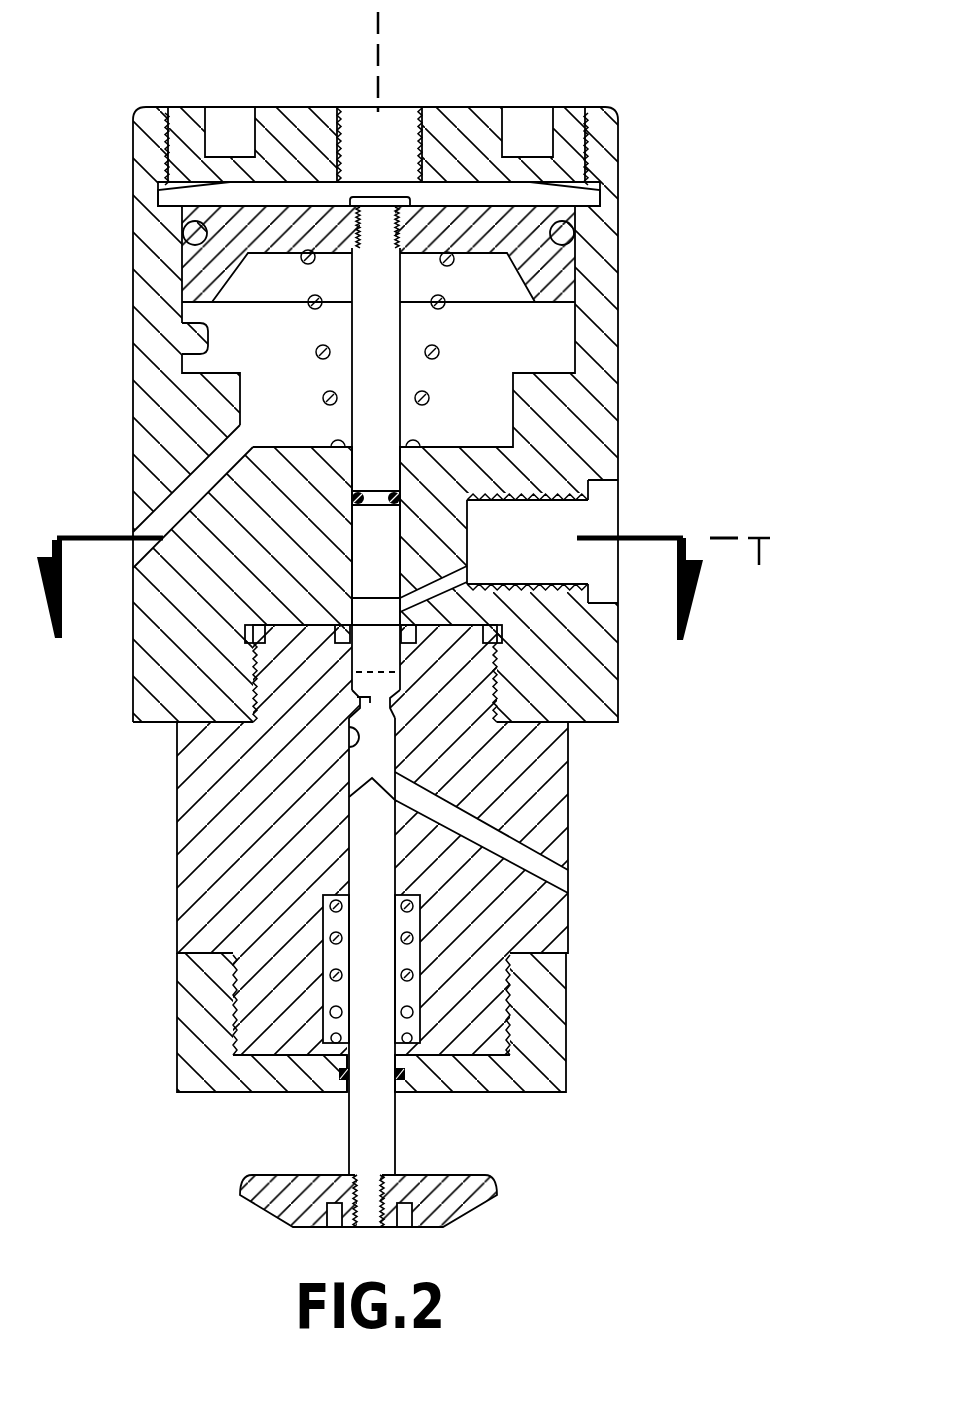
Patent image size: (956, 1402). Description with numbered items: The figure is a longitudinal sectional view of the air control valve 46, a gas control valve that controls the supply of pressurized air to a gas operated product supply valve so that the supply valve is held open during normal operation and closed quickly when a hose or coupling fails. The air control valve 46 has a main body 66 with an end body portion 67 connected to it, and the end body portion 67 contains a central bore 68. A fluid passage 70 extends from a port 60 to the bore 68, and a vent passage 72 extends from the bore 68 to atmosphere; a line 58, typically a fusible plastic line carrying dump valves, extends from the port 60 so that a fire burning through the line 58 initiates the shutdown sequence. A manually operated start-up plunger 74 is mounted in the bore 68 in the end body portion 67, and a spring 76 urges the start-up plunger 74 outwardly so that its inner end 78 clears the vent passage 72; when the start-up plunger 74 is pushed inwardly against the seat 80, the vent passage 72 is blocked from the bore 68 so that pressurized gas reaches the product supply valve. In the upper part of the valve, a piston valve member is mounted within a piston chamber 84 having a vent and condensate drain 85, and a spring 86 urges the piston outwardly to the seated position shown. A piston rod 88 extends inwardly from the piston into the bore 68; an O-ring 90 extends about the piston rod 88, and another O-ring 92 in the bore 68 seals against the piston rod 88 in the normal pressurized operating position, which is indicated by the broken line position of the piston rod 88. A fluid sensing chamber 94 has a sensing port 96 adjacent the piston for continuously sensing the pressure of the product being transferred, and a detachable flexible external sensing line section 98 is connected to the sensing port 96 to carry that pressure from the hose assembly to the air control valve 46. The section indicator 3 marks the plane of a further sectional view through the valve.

The section line 3- 3 is at (387, 568).
The air control valve 46 is at (407, 618).
The line 58 is at (762, 570).
The port 60 is at (570, 515).
The main body 66 is at (597, 376).
The end body portion 67 is at (527, 936).
The central bore 68 is at (347, 748).
The fluid passage 70 is at (420, 595).
The vent passage 72 is at (507, 848).
The start-up plunger 74 is at (360, 1116).
The spring 76 is at (337, 1012).
The inner end 78 is at (348, 705).
The seat 80 is at (374, 723).
The piston chamber 84 is at (200, 354).
The vent and condensate drain 85 is at (202, 477).
The spring 86 is at (315, 351).
The piston rod 88 is at (377, 422).
The O-ring 90 is at (400, 499).
The O-ring 92 is at (350, 640).
The fluid sensing chamber 94 is at (289, 190).
The sensing port 96 is at (408, 120).
The external sensing line section 98 is at (378, 25).